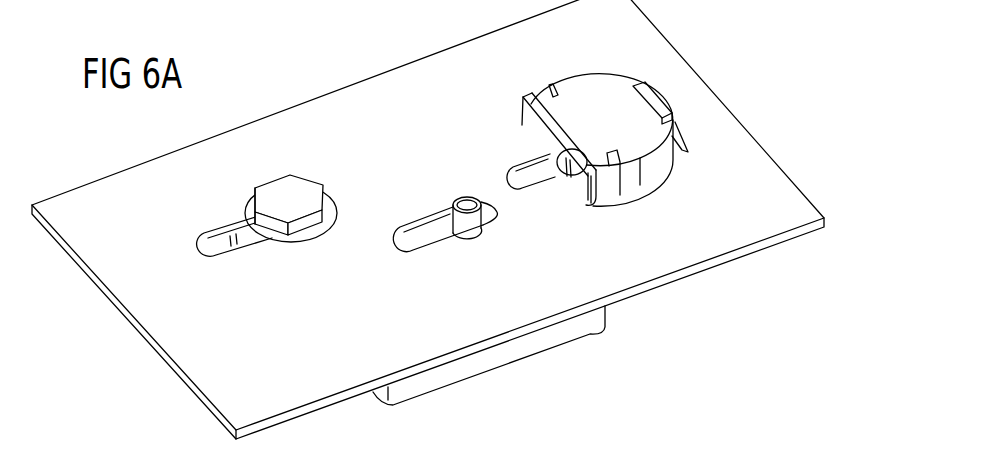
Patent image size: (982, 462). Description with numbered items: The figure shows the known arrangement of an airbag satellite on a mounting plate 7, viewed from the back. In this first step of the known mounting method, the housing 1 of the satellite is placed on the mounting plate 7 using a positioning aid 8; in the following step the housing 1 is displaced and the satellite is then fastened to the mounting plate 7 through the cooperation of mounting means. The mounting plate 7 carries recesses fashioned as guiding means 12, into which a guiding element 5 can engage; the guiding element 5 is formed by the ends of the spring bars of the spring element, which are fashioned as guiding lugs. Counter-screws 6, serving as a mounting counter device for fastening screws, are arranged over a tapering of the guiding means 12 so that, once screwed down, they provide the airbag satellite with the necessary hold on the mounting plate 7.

The housing 1 is at (583, 328).
The guiding element 5 is at (466, 201).
The counter-screws 6 is at (303, 192).
The mounting plate 7 is at (733, 142).
The positioning aid 8 is at (606, 89).
The guiding means 12 is at (217, 240).